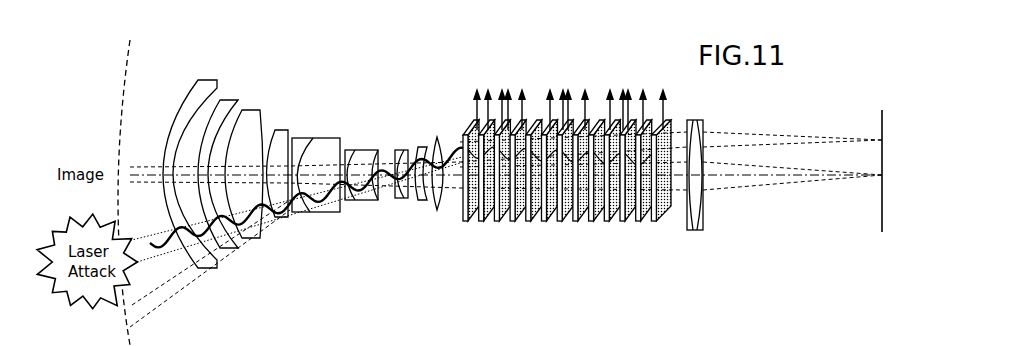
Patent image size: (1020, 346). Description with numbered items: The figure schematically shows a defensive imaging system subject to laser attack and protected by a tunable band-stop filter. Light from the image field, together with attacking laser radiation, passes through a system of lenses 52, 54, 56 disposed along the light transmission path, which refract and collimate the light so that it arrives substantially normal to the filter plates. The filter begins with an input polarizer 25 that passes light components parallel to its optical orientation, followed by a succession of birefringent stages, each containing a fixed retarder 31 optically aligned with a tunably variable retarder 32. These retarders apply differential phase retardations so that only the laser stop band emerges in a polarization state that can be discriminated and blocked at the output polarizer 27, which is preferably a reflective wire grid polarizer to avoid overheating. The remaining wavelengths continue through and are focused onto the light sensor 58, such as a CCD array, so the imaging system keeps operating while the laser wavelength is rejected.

The input polarizer 25 is at (544, 177).
The output polarizer 27 is at (668, 208).
The fixed retarder 31 is at (648, 145).
The tunably variable retarder 32 is at (667, 122).
The lens 52 is at (210, 90).
The lens 54 is at (253, 137).
The lens 56 is at (335, 153).
The light sensor 58 is at (882, 122).